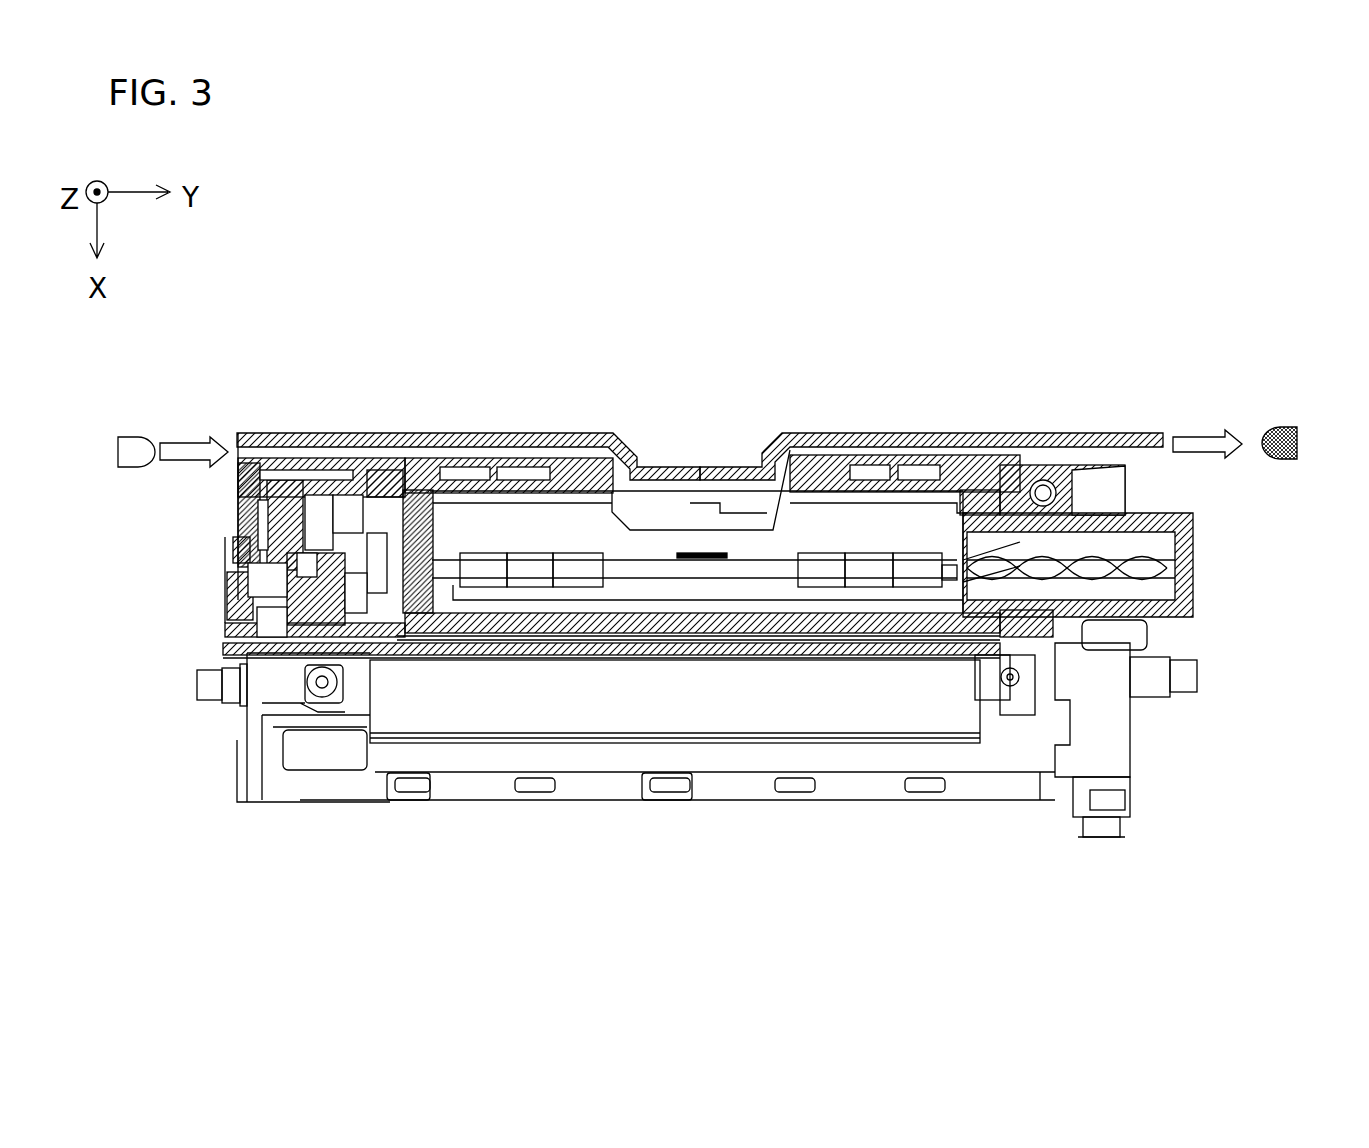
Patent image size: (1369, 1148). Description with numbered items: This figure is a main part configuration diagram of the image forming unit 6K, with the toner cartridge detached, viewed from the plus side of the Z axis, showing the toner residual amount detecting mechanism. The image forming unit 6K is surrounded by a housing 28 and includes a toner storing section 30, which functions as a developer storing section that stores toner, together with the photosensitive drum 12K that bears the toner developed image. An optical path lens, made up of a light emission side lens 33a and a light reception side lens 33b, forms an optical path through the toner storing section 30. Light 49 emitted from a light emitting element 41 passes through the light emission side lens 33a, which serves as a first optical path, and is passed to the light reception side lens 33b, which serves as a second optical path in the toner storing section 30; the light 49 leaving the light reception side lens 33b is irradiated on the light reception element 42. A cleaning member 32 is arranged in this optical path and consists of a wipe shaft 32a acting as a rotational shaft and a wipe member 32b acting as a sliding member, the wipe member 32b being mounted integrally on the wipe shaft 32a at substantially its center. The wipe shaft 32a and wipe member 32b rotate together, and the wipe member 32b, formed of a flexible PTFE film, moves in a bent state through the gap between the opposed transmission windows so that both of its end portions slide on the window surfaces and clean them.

The image forming unit 6K is at (697, 635).
The photosensitive drum 12K is at (868, 718).
The housing 28 is at (1194, 565).
The toner storing section 30 is at (513, 500).
The cleaning member 32 is at (703, 606).
The wipe shaft 32a is at (770, 570).
The wipe member 32b is at (703, 548).
The light emission side lens 33a is at (580, 445).
The light reception side lens 33b is at (900, 445).
The light emitting element 41 is at (133, 447).
The light reception element 42 is at (1286, 425).
The light 49 is at (190, 453).